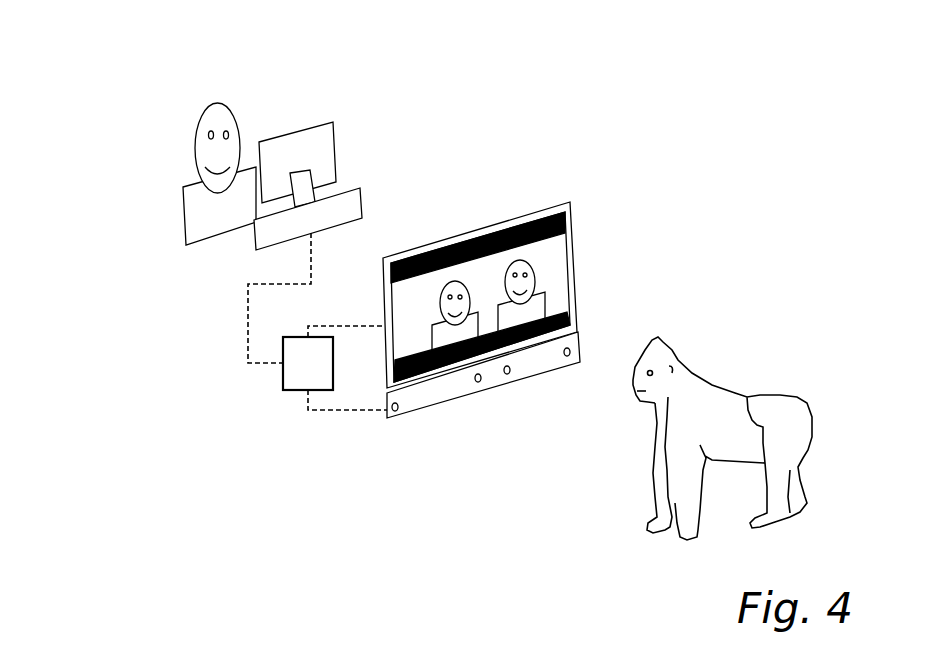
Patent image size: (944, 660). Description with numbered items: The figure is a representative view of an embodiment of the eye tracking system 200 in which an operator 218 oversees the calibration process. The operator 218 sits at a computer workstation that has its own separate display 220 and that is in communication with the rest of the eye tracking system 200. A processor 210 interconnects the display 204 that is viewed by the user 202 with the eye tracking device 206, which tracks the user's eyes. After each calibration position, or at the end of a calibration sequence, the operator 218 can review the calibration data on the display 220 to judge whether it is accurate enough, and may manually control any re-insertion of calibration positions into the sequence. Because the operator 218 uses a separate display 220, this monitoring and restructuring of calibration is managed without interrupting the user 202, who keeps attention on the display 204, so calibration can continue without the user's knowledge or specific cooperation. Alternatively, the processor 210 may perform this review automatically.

The eye tracking system 200 is at (172, 79).
The user 202 is at (735, 387).
The display 204 is at (573, 227).
The eye tracking device 206 is at (578, 345).
The processor 210 is at (283, 375).
The operator 218 is at (183, 223).
The display 220 is at (336, 150).